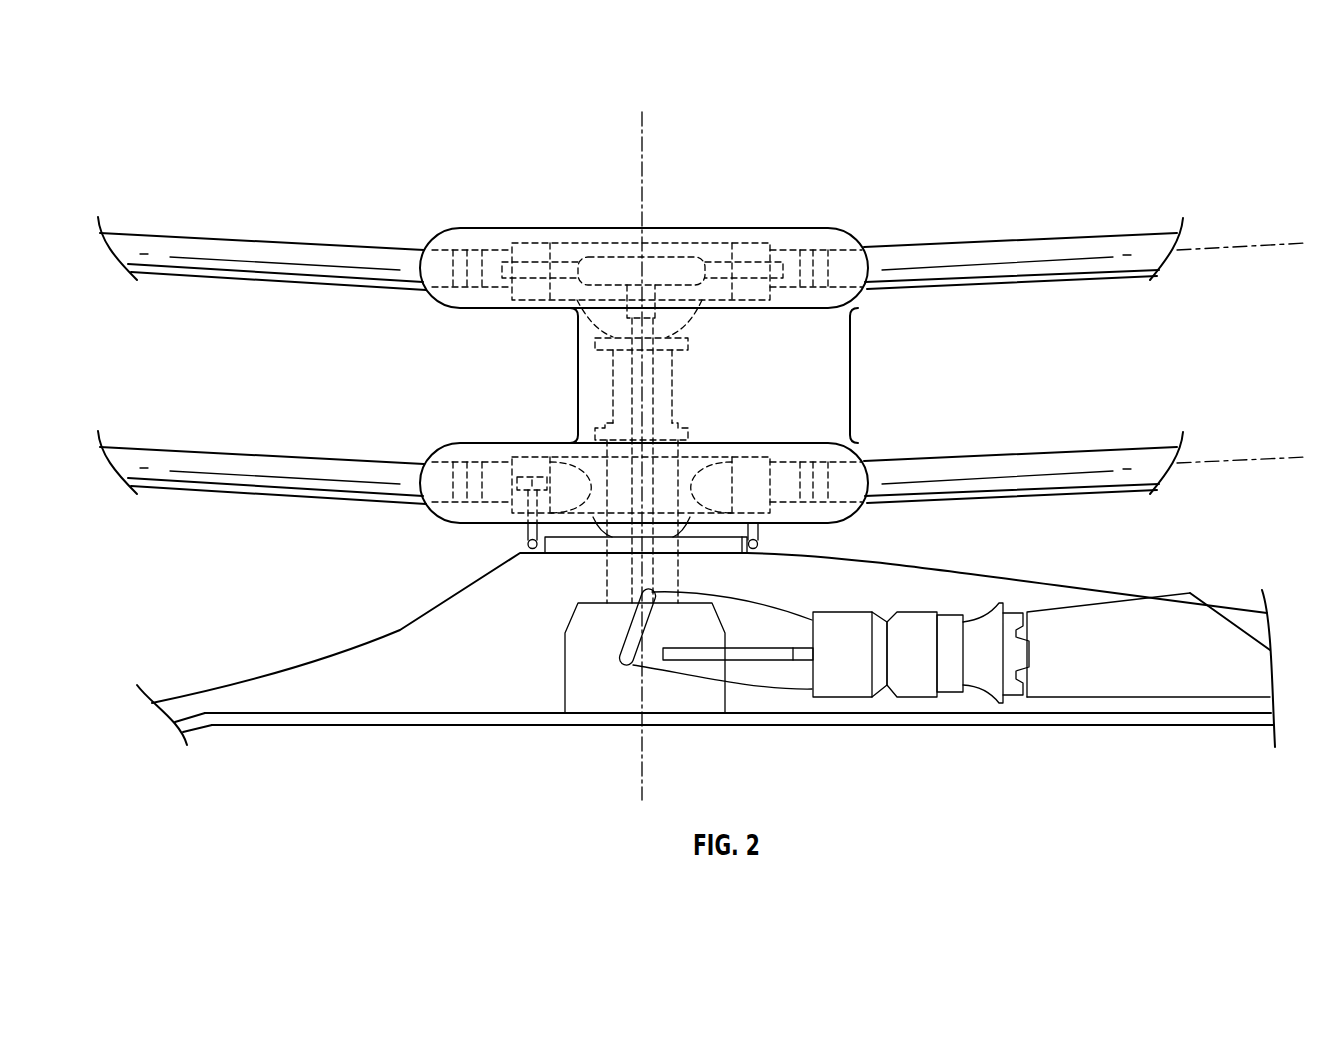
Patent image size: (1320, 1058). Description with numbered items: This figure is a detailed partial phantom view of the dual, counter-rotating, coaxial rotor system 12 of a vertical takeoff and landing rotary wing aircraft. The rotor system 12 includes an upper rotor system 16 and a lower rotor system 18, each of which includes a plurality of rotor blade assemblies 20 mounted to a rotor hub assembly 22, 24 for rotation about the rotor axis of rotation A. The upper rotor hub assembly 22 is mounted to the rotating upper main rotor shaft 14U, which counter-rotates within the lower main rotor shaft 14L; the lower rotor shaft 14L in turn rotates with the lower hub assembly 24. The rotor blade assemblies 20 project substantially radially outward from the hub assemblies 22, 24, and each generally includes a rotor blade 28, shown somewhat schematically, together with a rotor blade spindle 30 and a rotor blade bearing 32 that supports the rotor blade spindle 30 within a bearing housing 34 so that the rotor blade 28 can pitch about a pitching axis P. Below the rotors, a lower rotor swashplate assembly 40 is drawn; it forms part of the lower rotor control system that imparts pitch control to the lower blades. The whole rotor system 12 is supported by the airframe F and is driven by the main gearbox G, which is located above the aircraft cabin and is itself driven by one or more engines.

The dual, counter-rotating, coaxial main rotor system 12 is at (598, 455).
The upper main rotor shaft 14U is at (627, 372).
The lower main rotor shaft 14L is at (613, 397).
The upper rotor system 16 is at (640, 239).
The lower rotor system 18 is at (640, 478).
The rotor blade assembly 20 is at (1072, 455).
The upper rotor hub assembly 22 is at (677, 265).
The lower rotor hub assembly 24 is at (678, 507).
The rotor blade 28 is at (1033, 245).
The rotor blade spindle 30 is at (830, 263).
The rotor blade bearing 32 is at (813, 250).
The bearing housing 34 is at (750, 257).
The lower rotor swashplate assembly 40 is at (565, 545).
The axis of rotation A is at (642, 123).
The main gearbox G is at (600, 692).
The airframe F is at (837, 680).
The pitching axis P is at (1265, 249).